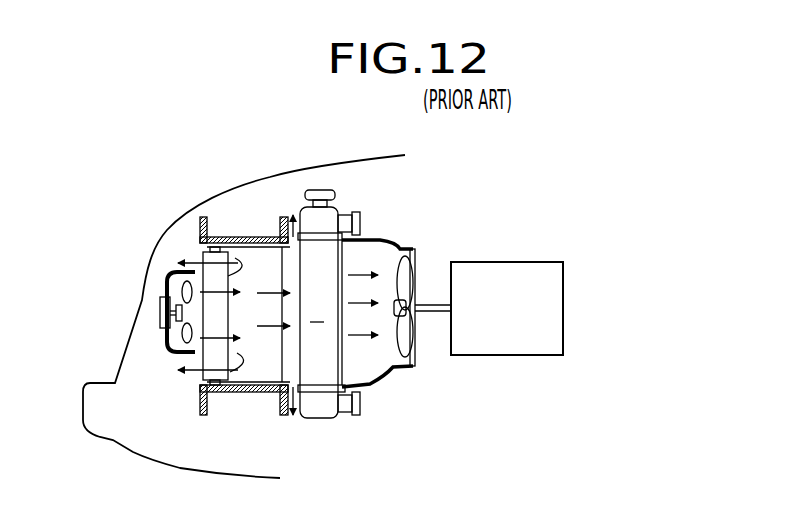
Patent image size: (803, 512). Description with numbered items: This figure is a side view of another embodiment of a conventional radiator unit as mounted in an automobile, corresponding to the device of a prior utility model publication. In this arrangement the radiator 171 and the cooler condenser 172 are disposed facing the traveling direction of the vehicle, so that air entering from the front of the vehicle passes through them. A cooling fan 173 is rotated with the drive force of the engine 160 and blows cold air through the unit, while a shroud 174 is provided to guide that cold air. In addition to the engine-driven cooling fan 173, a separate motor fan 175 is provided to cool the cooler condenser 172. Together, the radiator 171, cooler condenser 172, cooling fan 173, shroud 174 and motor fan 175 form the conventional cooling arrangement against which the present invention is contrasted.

The engine 160 is at (534, 262).
The radiator 171 is at (330, 258).
The cooler condenser 172 is at (215, 328).
The cooling fan 173 is at (408, 335).
The shroud 174 is at (404, 249).
The motor fan 175 is at (178, 313).